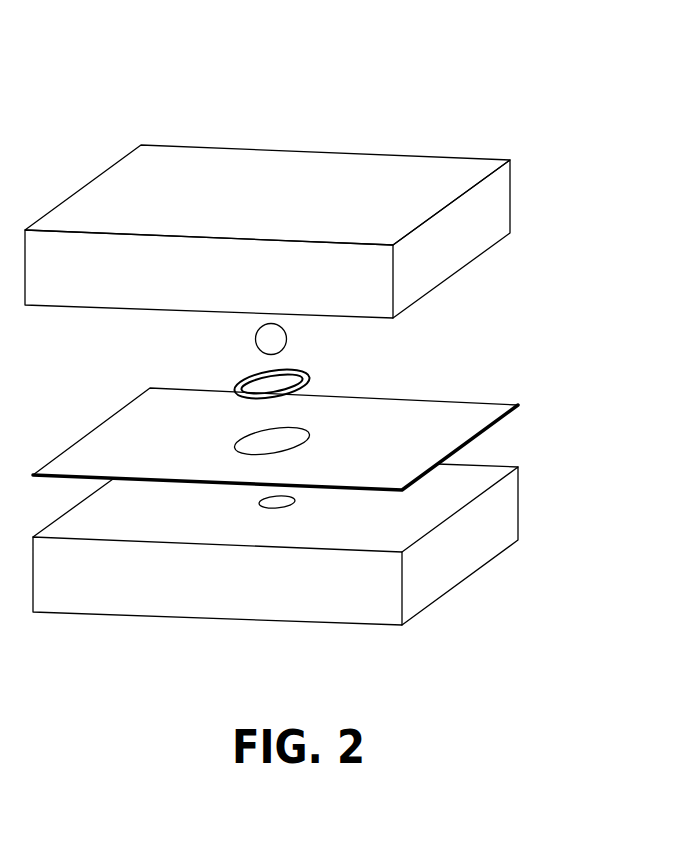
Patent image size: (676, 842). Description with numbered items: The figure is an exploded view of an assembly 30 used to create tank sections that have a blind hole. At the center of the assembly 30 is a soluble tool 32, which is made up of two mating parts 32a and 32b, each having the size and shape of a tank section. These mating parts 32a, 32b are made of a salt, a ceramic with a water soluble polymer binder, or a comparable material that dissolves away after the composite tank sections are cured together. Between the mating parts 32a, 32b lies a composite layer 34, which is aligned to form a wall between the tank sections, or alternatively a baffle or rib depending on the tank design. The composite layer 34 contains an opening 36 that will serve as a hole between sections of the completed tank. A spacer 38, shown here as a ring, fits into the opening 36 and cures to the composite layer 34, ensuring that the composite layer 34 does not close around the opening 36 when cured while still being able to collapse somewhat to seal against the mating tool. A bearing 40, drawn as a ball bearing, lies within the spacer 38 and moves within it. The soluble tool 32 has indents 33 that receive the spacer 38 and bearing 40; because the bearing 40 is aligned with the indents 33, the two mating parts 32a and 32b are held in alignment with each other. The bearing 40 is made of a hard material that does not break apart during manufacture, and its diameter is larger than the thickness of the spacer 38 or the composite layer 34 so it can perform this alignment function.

The assembly 30 is at (168, 80).
The soluble tool 32 is at (318, 108).
The mating part 32a is at (493, 205).
The mating part 32b is at (500, 513).
The indents 33 is at (283, 508).
The composite layer 34 is at (420, 415).
The opening 36 is at (262, 445).
The spacer 38 is at (332, 383).
The bearing 40 is at (247, 337).